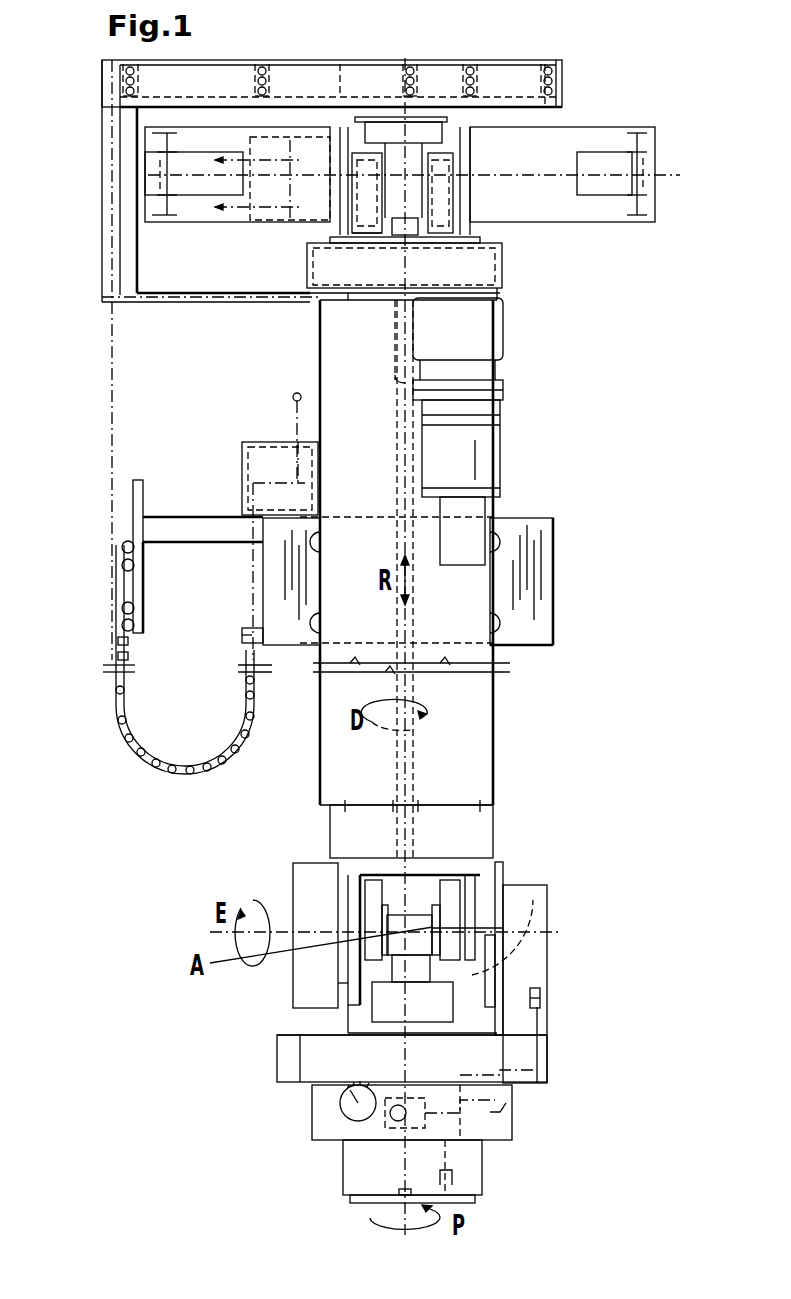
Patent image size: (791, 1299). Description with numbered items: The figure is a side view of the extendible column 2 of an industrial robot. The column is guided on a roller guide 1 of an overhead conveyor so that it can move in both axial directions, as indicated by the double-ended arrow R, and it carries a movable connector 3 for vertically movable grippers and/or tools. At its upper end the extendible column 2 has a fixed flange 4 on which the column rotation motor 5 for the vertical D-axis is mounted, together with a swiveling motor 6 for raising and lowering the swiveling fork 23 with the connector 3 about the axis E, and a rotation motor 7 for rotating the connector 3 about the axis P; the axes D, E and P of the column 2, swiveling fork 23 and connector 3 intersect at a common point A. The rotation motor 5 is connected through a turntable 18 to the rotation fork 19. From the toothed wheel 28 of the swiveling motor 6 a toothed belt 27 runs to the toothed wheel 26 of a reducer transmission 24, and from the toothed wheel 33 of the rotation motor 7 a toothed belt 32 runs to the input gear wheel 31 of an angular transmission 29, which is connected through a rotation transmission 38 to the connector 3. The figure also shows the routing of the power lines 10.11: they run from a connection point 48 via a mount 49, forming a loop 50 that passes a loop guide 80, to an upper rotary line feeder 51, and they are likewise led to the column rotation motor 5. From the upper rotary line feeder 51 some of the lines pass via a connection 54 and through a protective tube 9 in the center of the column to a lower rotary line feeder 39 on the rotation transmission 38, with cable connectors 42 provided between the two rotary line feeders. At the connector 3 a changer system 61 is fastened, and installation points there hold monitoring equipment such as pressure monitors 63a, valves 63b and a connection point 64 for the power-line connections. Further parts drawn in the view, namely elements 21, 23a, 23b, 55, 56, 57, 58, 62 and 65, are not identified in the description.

The roller guide 1 is at (540, 552).
The extendible column 2 is at (473, 698).
The connector 3 is at (330, 1123).
The fixed flange 4 is at (307, 255).
The column rotation motor 5 is at (457, 392).
The swiveling motor 6 is at (280, 207).
The rotation motor 7 is at (540, 183).
The protective tube 9 is at (455, 250).
The power lines 10.11 is at (497, 45).
The turntable 18 is at (412, 232).
The rotation fork 19 is at (487, 872).
The column end block 21 is at (470, 832).
The swiveling fork 23 is at (475, 983).
The housing upper part 23a is at (337, 983).
The housing lower part 23b is at (368, 1033).
The reducer transmission 24 is at (307, 993).
The toothed wheel 26 is at (365, 928).
The toothed belt 27 is at (375, 887).
The toothed wheel 28 is at (358, 155).
The angular transmission 29 is at (500, 900).
The input gear wheel 31 is at (503, 928).
The toothed belt 32 is at (437, 177).
The toothed wheel 33 is at (467, 183).
The rotation transmission 38 is at (430, 1010).
The lower rotary line feeder 39 is at (420, 1057).
The cable connectors 42 is at (542, 1000).
The connection point 48 is at (189, 551).
The mount 49 is at (247, 635).
The loop 50 is at (172, 748).
The upper rotary line feeder 51 is at (565, 85).
The connection point 54 is at (215, 213).
The spring elements 55 is at (130, 78).
The end cap 56 is at (560, 62).
The upright 57 is at (118, 250).
The stop 58 is at (340, 80).
The changer system 61 is at (367, 1152).
The bottom plate 62 is at (362, 1192).
The pressure monitors 63a is at (343, 1093).
The valves 63b is at (383, 1122).
The connection point 64 is at (500, 1103).
The sensor bracket 65 is at (452, 1170).
The loop guide 80 is at (165, 525).